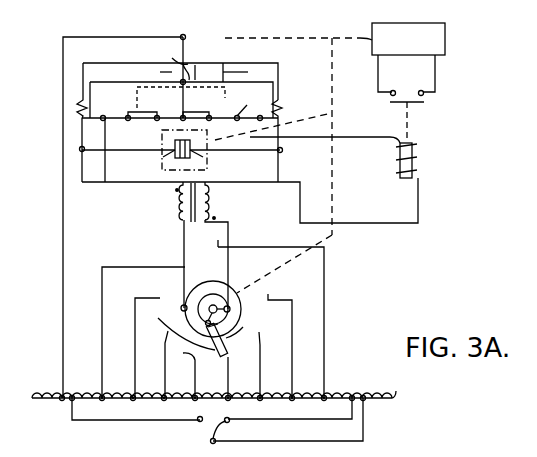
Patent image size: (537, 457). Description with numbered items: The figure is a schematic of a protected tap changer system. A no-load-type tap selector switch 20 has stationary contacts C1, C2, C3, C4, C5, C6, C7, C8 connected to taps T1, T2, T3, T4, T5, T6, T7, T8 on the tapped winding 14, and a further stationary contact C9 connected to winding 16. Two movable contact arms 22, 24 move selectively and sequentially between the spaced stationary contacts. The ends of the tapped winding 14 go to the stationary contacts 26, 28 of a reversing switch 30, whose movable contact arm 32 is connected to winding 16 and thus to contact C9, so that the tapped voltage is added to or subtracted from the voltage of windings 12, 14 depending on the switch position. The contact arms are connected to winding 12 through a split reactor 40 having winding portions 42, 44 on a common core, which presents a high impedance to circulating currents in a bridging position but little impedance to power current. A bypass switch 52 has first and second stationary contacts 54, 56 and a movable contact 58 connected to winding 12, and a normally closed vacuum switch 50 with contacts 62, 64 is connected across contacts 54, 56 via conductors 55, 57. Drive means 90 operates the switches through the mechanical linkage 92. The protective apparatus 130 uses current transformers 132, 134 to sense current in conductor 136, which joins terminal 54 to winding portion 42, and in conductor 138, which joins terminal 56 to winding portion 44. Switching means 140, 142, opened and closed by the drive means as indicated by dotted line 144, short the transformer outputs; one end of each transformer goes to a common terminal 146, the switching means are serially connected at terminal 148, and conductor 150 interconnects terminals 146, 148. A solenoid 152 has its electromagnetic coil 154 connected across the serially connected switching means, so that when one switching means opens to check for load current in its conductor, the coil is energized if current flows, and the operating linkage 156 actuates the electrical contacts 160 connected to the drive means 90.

The winding 12 is at (50, 400).
The tapped winding 14 is at (355, 394).
The winding 16 is at (422, 394).
The tap selector switch 20 is at (133, 293).
The movable contact arm 22 is at (171, 330).
The movable contact arm 24 is at (236, 331).
The stationary contact 26 is at (197, 421).
The stationary contact 28 is at (276, 433).
The reversing switch 30 is at (206, 452).
The movable contact arm 32 is at (229, 421).
The split reactor 40 is at (152, 202).
The winding portion 42 is at (178, 207).
The winding portion 44 is at (208, 199).
The vacuum switch 50 is at (163, 134).
The bypass switch 52 is at (194, 32).
The stationary contact 54 is at (172, 55).
The conductor 55 is at (110, 183).
The stationary contact 56 is at (207, 74).
The conductor 57 is at (252, 160).
The movable contact 58 is at (188, 60).
The contact 62 is at (164, 153).
The contact 64 is at (200, 156).
The tap changer drive means 90 is at (485, 40).
The mechanical linkage 92 is at (362, 40).
The protective apparatus 130 is at (321, 163).
The current transformer 132 is at (78, 98).
The current transformer 134 is at (284, 108).
The conductor 136 is at (83, 185).
The conductor 138 is at (255, 182).
The switching means 140 is at (128, 116).
The switching means 142 is at (249, 100).
The dotted line 144 is at (252, 73).
The common terminal 146 is at (152, 73).
The terminal 148 is at (182, 100).
The conductor 150 is at (166, 103).
The solenoid 152 is at (463, 167).
The electromagnetic coil 154 is at (398, 150).
The operating linkage 156 is at (432, 124).
The electrical contacts 160 is at (425, 95).
The stationary contact C1 is at (183, 259).
The stationary contact C2 is at (165, 296).
The stationary contact C3 is at (170, 337).
The stationary contact C4 is at (183, 350).
The stationary contact C5 is at (237, 356).
The stationary contact C6 is at (254, 335).
The stationary contact C7 is at (268, 294).
The stationary contact C8 is at (248, 272).
The stationary contact C9 is at (222, 243).
The tap T1 is at (99, 395).
The tap T2 is at (130, 395).
The tap T3 is at (161, 395).
The tap T4 is at (192, 395).
The tap T5 is at (225, 395).
The tap T6 is at (257, 395).
The tap T7 is at (289, 395).
The tap T8 is at (321, 395).